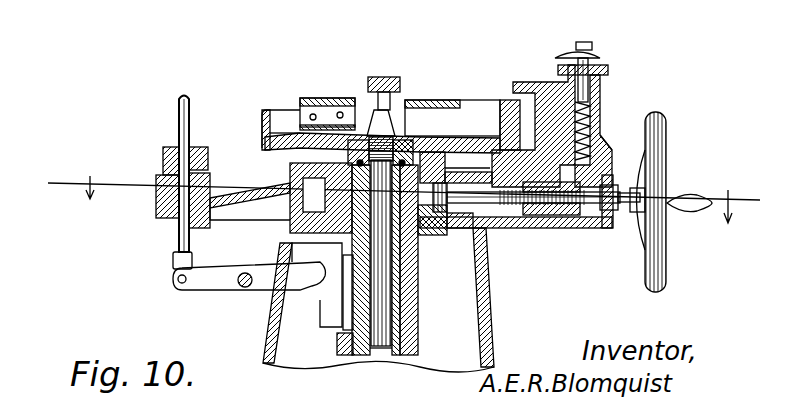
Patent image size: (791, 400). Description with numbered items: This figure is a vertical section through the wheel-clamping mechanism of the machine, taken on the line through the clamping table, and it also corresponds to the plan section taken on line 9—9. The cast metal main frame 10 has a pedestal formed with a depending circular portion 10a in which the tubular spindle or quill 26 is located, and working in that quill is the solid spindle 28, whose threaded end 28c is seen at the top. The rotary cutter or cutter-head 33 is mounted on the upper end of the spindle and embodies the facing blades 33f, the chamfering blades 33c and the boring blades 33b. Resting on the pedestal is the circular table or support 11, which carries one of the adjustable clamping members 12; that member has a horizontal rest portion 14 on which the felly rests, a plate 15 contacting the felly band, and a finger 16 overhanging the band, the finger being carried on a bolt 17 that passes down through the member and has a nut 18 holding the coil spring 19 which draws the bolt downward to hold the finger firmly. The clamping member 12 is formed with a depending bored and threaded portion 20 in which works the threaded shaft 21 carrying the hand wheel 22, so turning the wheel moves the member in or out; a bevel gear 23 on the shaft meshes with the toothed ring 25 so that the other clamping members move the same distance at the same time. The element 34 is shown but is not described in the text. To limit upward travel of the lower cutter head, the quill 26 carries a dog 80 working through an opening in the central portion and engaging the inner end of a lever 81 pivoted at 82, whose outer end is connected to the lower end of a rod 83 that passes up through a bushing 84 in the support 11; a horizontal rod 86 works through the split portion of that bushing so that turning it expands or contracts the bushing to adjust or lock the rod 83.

The section line 9— 9 is at (397, 199).
The main frame 10 is at (488, 322).
The depending circular portion 10a is at (410, 318).
The circular table or support 11 is at (264, 210).
The clamping member 12 is at (605, 120).
The horizontal rest portion 14 is at (522, 84).
The plate 15 is at (558, 68).
The finger 16 is at (586, 42).
The bolt 17 is at (598, 60).
The nut 18 is at (610, 148).
The coil spring 19 is at (600, 100).
The depending bored and threaded portion 20 is at (546, 218).
The threaded shaft 21 is at (518, 210).
The hand wheel 22 is at (664, 175).
The bevel gear 23 is at (420, 250).
The toothed ring 25 is at (320, 165).
The tubular spindle or quill 26 is at (400, 333).
The solid spindle 28 is at (386, 282).
The threaded end 28c is at (396, 106).
The rotary cutter or cutter-head 33 is at (302, 128).
The boring blades 33b is at (400, 86).
The chamfering blades 33c is at (440, 100).
The facing blades 33f is at (318, 98).
The table stop 34 is at (498, 116).
The dog 80 is at (336, 300).
The lever 81 is at (305, 276).
The pivot 82 is at (245, 288).
The rod 83 is at (189, 112).
The bushing 84 is at (164, 158).
The horizontal rod 86 is at (206, 155).